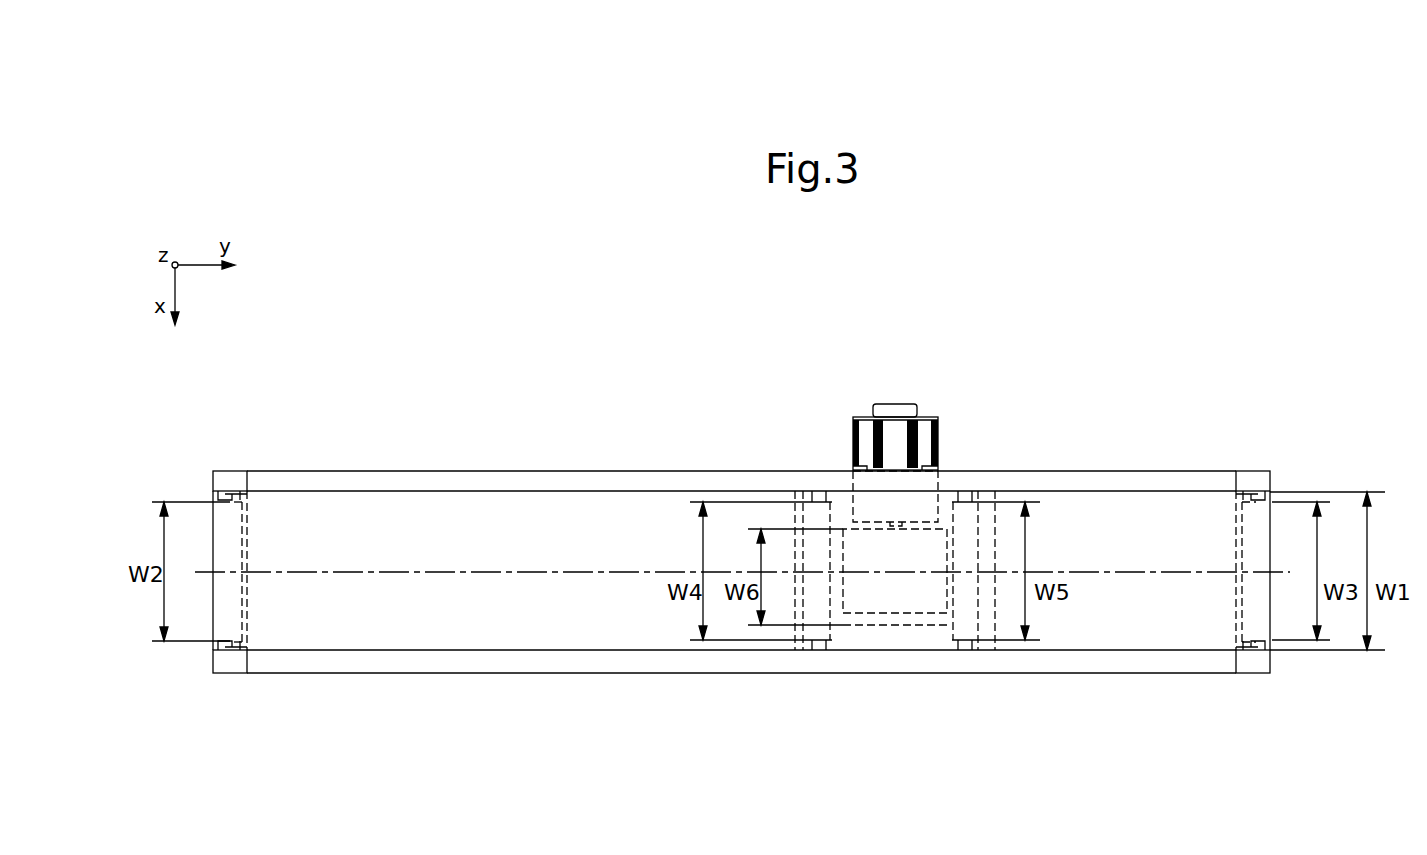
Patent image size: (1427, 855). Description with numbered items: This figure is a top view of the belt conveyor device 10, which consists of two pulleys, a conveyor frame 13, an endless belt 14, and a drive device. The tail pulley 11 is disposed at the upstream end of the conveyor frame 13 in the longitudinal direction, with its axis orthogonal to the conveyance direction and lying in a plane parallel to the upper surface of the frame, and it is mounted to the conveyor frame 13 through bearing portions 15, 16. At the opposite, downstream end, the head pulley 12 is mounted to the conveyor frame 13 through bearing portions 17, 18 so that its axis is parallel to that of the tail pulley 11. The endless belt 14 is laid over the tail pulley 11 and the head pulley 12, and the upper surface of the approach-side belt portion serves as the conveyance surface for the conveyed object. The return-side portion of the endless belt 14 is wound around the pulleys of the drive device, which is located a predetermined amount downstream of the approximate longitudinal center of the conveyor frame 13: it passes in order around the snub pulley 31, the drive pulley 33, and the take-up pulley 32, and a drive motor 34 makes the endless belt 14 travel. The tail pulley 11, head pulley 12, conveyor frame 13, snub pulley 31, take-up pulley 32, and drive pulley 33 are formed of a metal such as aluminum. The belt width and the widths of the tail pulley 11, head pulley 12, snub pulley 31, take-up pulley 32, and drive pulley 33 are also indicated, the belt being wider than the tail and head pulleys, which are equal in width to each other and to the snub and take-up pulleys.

The belt conveyor device 10 is at (450, 402).
The tail pulley 11 is at (235, 610).
The head pulley 12 is at (1248, 608).
The conveyor frame 13 is at (1077, 665).
The endless belt 14 is at (1117, 503).
The bearing portion 15 is at (228, 475).
The bearing portion 16 is at (231, 665).
The bearing portion 17 is at (1254, 475).
The bearing portion 18 is at (1254, 665).
The snub pulley 31 is at (950, 637).
The take-up pulley 32 is at (832, 633).
The drive pulley 33 is at (897, 618).
The drive motor 34 is at (928, 440).